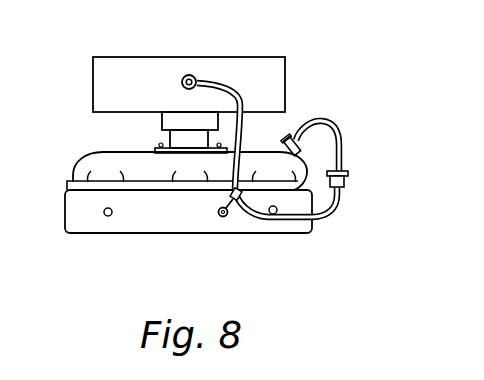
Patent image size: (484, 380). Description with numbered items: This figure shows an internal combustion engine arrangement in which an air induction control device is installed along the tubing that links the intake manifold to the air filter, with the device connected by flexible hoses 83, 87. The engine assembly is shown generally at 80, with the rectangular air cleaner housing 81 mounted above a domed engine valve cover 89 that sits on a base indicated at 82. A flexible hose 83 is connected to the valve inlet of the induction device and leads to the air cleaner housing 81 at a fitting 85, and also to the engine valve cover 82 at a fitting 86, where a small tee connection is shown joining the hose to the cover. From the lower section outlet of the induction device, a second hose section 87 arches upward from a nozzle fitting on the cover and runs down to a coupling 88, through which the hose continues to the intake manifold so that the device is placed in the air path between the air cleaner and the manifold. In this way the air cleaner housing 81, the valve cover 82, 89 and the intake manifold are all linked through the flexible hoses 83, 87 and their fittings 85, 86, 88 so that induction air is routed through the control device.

The heating assembly 80 is at (212, 147).
The air cleaner housing 81 is at (142, 77).
The engine valve cover 82 is at (82, 217).
The flexible hose 83 is at (250, 220).
The connection to air cleaner housing 85 is at (198, 79).
The connection to engine valve cover 86 is at (215, 208).
The hose section 87 is at (322, 122).
The coupling 88 is at (362, 131).
The dome cover 89 is at (112, 167).